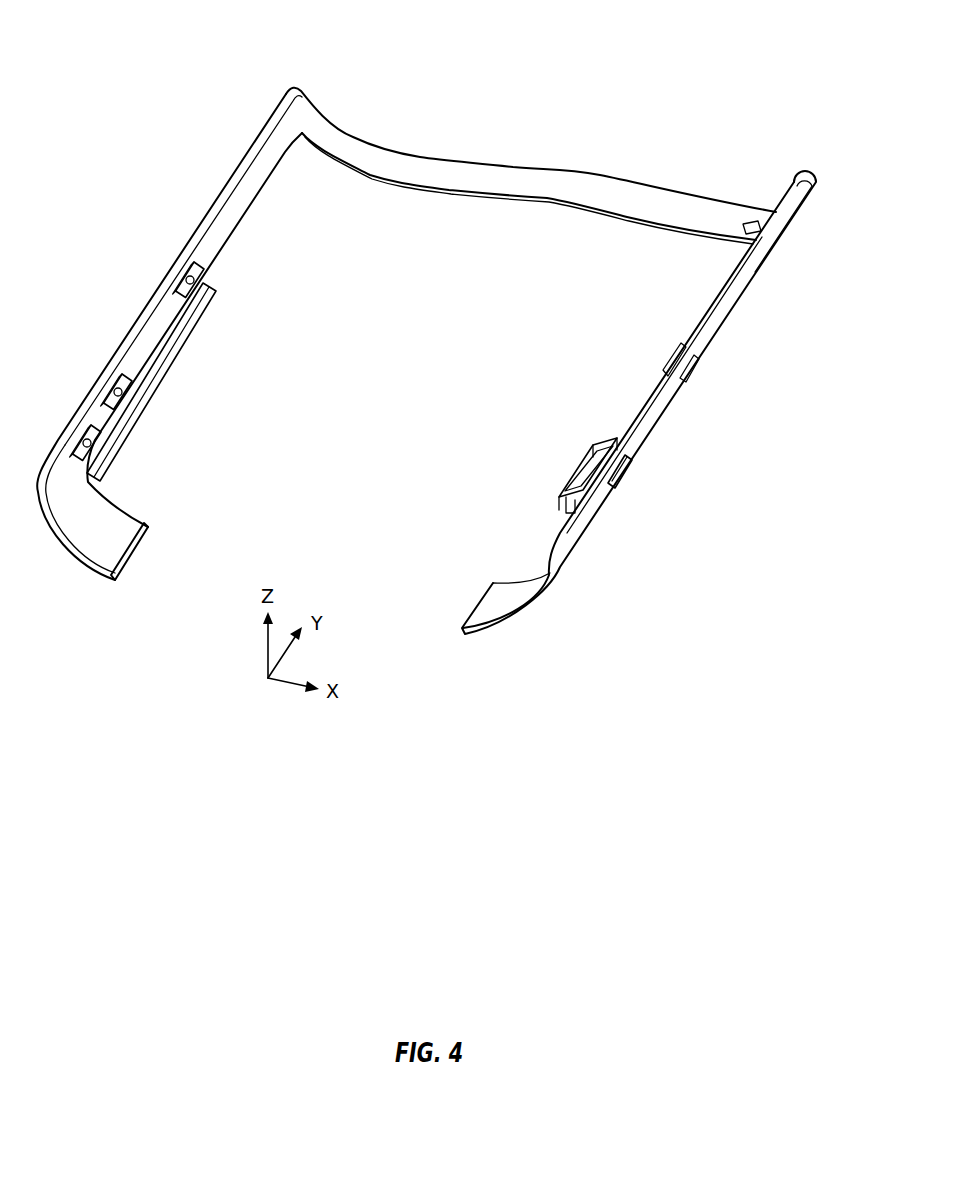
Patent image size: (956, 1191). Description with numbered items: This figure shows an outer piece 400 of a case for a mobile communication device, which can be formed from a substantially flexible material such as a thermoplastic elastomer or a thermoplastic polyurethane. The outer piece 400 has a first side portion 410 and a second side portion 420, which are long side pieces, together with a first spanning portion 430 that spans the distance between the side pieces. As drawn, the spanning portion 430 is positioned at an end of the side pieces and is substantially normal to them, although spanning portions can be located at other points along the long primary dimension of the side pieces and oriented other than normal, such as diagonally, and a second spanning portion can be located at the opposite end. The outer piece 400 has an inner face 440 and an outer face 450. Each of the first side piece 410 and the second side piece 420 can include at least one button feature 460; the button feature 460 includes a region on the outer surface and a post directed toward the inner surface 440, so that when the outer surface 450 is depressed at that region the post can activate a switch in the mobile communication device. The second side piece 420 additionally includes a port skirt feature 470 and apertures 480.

The outer piece 400 is at (158, 40).
The first side portion 410 is at (150, 293).
The second side portion 420 is at (774, 271).
The first spanning portion 430 is at (397, 148).
The inner face 440 is at (237, 215).
The outer face 450 is at (722, 310).
The button feature 460 is at (179, 296).
The port skirt feature 470 is at (573, 467).
The apertures 480 is at (625, 477).